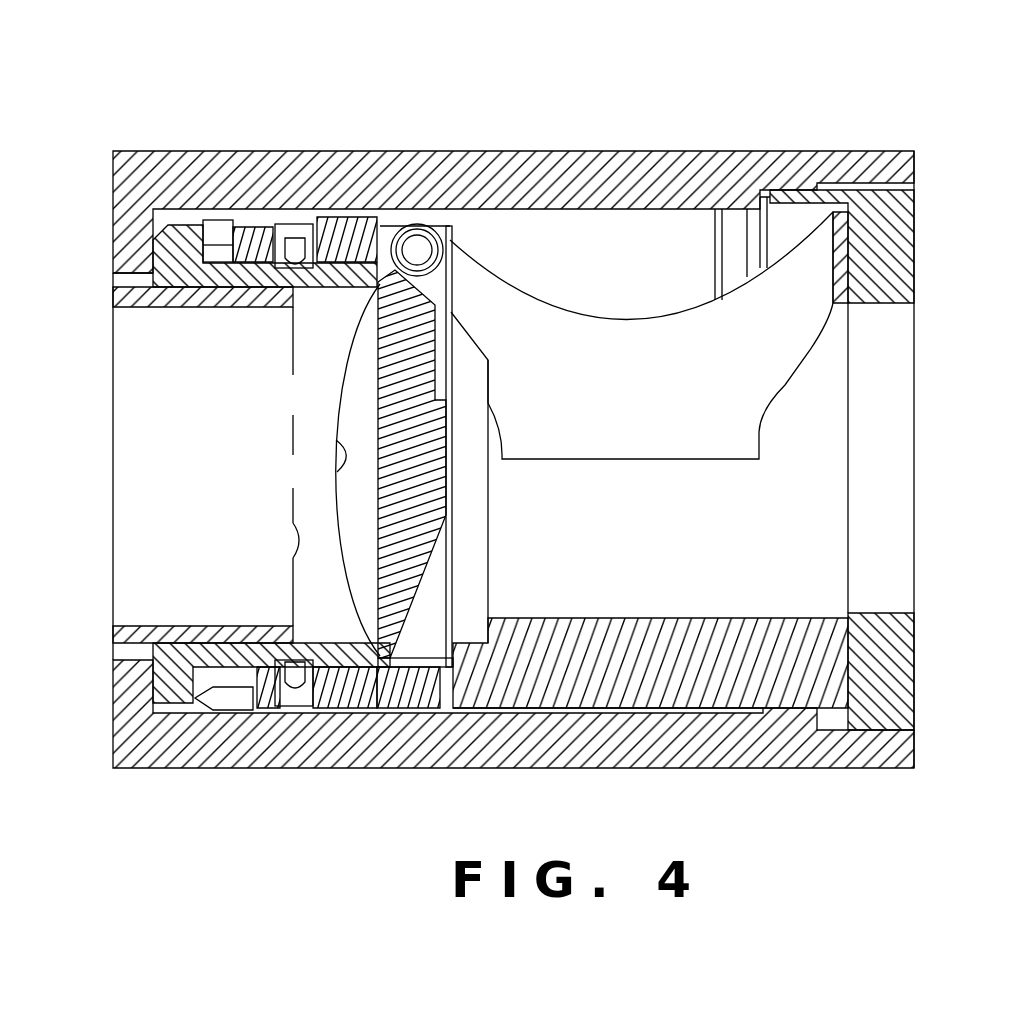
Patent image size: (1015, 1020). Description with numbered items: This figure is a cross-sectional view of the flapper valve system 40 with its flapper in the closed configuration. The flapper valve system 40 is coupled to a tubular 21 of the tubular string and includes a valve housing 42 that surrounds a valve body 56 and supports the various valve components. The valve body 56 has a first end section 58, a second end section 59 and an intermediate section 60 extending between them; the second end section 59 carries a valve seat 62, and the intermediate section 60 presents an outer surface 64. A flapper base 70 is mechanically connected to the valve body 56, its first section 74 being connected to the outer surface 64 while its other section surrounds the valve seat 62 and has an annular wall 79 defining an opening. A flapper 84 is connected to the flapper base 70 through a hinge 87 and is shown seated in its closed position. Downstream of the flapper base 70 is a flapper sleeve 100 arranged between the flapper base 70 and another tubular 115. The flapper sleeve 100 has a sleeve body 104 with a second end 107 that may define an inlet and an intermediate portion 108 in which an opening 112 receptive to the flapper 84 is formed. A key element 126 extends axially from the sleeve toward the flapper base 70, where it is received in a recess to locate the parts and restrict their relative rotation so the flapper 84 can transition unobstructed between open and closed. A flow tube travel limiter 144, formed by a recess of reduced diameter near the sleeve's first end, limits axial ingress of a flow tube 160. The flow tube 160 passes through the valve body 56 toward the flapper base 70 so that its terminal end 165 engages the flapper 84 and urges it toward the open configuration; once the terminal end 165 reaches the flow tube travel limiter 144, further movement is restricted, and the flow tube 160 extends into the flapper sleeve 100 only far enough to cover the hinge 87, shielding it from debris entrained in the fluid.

The flapper valve system 40 is at (208, 102).
The valve housing 42 is at (540, 142).
The tubular 21 is at (130, 248).
The valve body 56 is at (173, 222).
The first end section 58 is at (140, 281).
The second end section 59 is at (352, 350).
The intermediate section 60 is at (250, 280).
The valve seat 62 is at (338, 460).
The outer surface 64 is at (255, 224).
The flapper base 70 is at (363, 194).
The first section 74 is at (343, 222).
The annular wall 79 is at (398, 648).
The flapper 84 is at (444, 430).
The hinge 87 is at (418, 246).
The flapper sleeve 100 is at (818, 712).
The sleeve body 104 is at (612, 702).
The second end 107 is at (850, 262).
The intermediate portion 108 is at (565, 668).
The opening 112 is at (820, 240).
The tubular 115 is at (878, 210).
The key element 126 is at (412, 690).
The flow tube travel limiter 144 is at (468, 623).
The flow tube 160 is at (178, 660).
The terminal end 165 is at (292, 559).